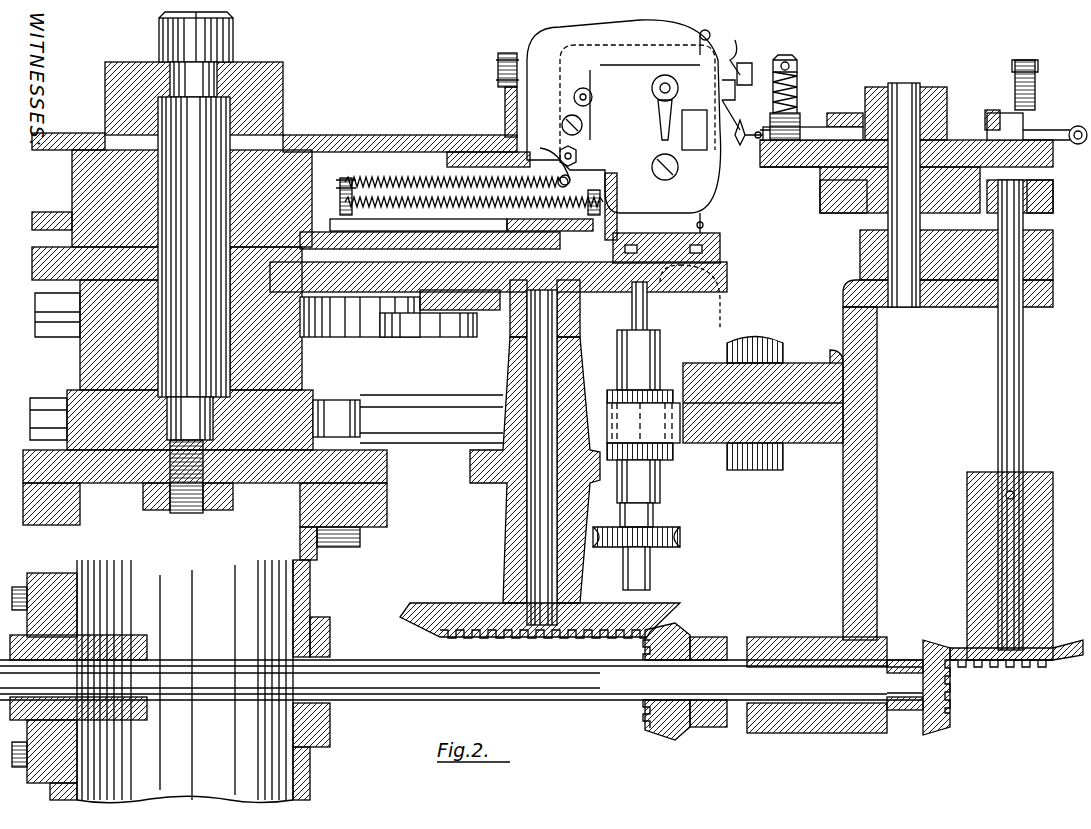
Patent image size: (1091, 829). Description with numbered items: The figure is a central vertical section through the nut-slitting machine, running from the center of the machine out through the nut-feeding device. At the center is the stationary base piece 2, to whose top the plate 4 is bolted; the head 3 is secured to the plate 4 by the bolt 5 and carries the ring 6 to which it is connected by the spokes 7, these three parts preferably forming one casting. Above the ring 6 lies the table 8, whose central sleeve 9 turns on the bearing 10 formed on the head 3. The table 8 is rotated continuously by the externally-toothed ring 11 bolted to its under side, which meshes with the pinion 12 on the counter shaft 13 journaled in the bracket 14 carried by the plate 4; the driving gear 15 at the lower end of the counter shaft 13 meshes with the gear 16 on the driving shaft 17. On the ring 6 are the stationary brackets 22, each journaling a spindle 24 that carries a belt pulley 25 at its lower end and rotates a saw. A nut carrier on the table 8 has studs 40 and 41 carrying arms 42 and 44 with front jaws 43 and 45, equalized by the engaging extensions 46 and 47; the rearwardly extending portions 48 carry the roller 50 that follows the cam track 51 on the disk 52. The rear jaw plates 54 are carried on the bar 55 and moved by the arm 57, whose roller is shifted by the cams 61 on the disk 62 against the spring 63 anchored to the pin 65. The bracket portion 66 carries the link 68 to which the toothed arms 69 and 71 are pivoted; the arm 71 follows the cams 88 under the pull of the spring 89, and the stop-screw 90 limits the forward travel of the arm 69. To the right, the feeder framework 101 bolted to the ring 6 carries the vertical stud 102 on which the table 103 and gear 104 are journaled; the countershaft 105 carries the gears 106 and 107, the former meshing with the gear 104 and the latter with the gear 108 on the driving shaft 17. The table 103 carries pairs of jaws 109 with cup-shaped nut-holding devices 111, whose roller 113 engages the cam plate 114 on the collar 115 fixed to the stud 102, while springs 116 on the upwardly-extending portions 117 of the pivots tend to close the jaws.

The base piece 2 is at (315, 568).
The head 3 is at (80, 358).
The plate 4 is at (23, 462).
The bolt 5 is at (232, 62).
The ring 6 is at (810, 447).
The spokes 7 is at (406, 412).
The table 8 is at (727, 272).
The sleeve 9 is at (302, 352).
The bearing 10 is at (302, 380).
The externally-toothed ring 11 is at (468, 337).
The pinion 12 is at (510, 340).
The counter shaft 13 is at (527, 382).
The bracket 14 is at (497, 490).
The driving gear 15 is at (478, 595).
The gear 16 is at (660, 735).
The driving shaft 17 is at (586, 700).
The stationary brackets 22 is at (617, 363).
The spindle 24 is at (632, 305).
The belt pulley 25 is at (682, 540).
The stud 40 is at (665, 45).
The stud 41 is at (665, 180).
The arms 42 is at (748, 52).
The jaw 43 is at (735, 90).
The arms 44 is at (733, 213).
The jaw 45 is at (746, 114).
The extension 46 is at (661, 98).
The extension 47 is at (658, 120).
The rearwardly extending portions 48 is at (670, 32).
The roller 50 is at (505, 53).
The cam track 51 is at (505, 108).
The disk 52 is at (385, 128).
The plates 54 is at (694, 130).
The bar 55 is at (591, 112).
The arm 57 is at (582, 155).
The cams 61 is at (500, 221).
The disk 62 is at (560, 243).
The spring 63 is at (420, 208).
The pin 65 is at (340, 185).
The rearwardly-extending portion 66 is at (595, 89).
The link 68 is at (560, 108).
The arm 69 is at (712, 35).
The arm 71 is at (708, 220).
The cams 88 is at (560, 168).
The spring 89 is at (392, 178).
The stop-screw 90 is at (752, 68).
The supplementary framework 101 is at (877, 480).
The vertical stud 102 is at (920, 150).
The table 103 is at (820, 160).
The gear 104 is at (835, 213).
The countershaft 105 is at (998, 423).
The gear 106 is at (1050, 197).
The gear 107 is at (1070, 645).
The gear 108 is at (950, 695).
The pairs of jaws 109 is at (745, 150).
The nut-holding devices 111 is at (1073, 145).
The roller 113 is at (988, 110).
The cam plate 114 is at (840, 108).
The collar 115 is at (935, 97).
The springs 116 is at (797, 92).
The upwardly-extending portion 117 is at (797, 62).